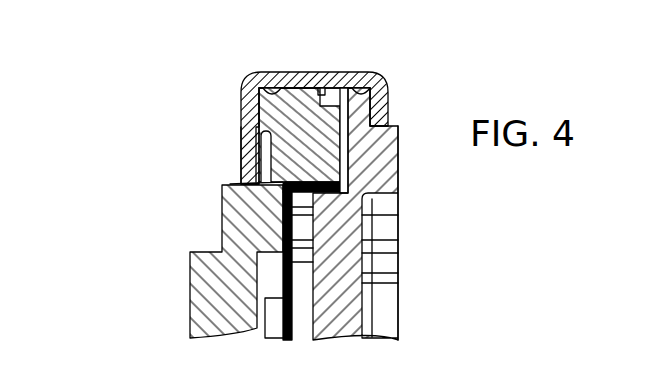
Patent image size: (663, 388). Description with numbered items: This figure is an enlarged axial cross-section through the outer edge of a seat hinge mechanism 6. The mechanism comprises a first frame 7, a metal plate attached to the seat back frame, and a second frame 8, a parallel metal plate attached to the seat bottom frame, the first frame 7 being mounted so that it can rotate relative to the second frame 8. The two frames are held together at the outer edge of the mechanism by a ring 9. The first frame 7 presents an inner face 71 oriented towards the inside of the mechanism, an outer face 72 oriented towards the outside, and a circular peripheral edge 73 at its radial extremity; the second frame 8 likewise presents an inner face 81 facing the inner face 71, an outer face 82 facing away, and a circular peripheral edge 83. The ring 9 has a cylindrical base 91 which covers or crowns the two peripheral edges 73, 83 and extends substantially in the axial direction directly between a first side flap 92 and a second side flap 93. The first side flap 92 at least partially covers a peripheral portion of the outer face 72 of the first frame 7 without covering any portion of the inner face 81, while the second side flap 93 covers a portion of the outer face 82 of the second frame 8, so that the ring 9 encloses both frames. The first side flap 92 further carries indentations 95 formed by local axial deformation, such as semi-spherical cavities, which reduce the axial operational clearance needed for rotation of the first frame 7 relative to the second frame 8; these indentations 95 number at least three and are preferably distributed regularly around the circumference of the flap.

The hinge mechanism 6 is at (96, 129).
The first frame 7 is at (200, 272).
The second frame 8 is at (345, 264).
The ring 9 is at (313, 72).
The inner face 71 is at (330, 108).
The outer face 72 is at (259, 153).
The circular peripheral edge 73 is at (260, 87).
The inner face 81 is at (338, 86).
The outer face 82 is at (399, 158).
The circular peripheral edge 83 is at (372, 88).
The cylindrical base 91 is at (298, 74).
The first side flap 92 is at (241, 132).
The second side flap 93 is at (389, 103).
The indentations 95 is at (240, 112).